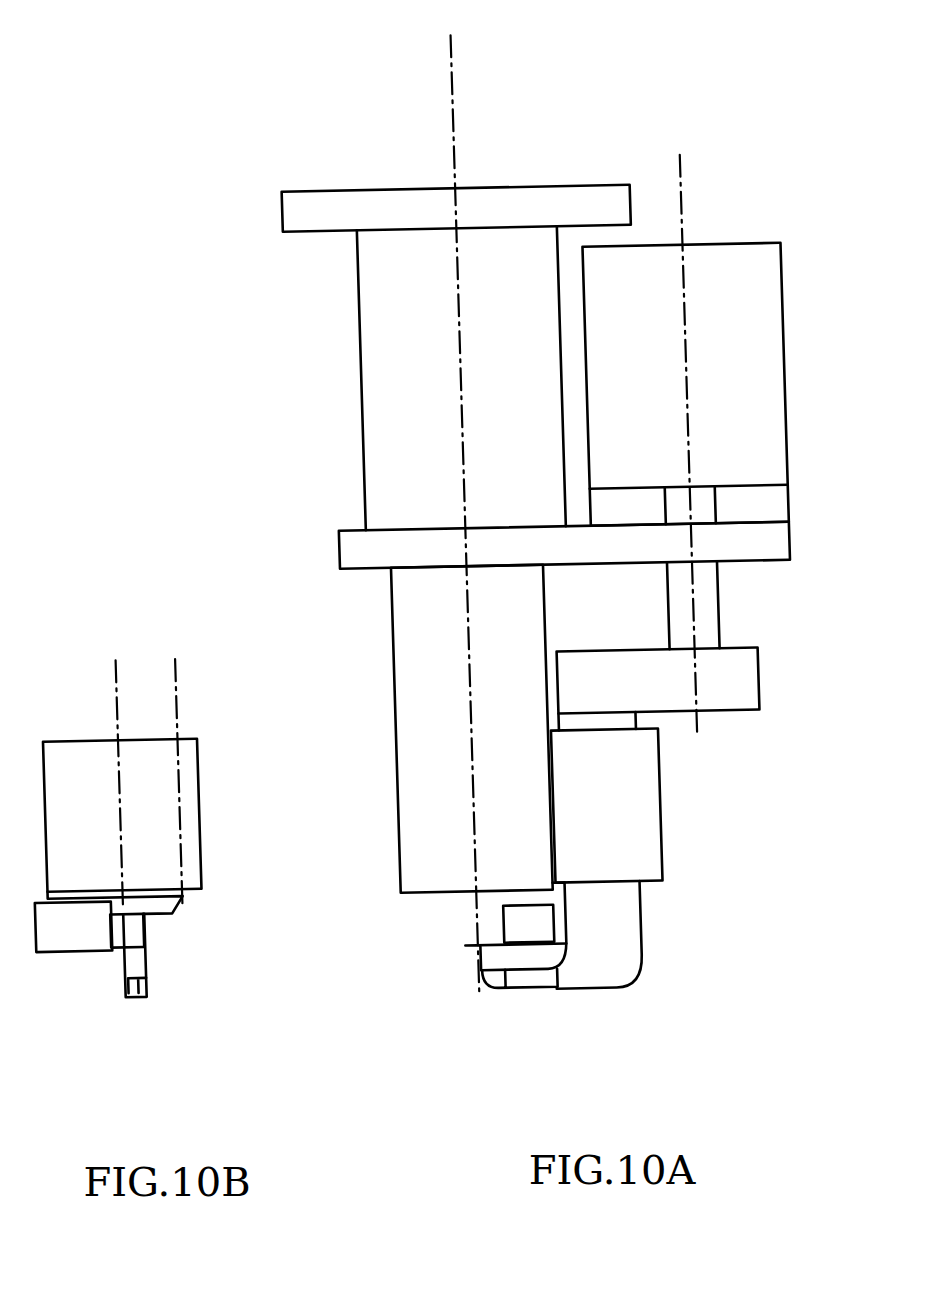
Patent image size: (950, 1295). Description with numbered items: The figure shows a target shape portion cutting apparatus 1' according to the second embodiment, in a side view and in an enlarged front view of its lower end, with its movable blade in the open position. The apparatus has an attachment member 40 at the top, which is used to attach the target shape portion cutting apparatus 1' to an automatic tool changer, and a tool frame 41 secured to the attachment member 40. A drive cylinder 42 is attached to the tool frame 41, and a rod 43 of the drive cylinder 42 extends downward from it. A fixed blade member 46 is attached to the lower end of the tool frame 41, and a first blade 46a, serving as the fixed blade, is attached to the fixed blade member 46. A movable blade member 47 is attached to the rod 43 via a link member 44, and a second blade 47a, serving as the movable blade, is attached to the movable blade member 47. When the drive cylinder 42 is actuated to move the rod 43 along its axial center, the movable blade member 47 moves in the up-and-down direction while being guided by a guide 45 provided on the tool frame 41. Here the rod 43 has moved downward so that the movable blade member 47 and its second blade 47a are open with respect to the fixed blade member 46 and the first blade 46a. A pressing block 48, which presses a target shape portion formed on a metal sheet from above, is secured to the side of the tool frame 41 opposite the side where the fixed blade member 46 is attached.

In FIG. 10A, the target shape portion cutting apparatus 1' is at (563, 507).
In FIG. 10A, the attachment member 40 is at (370, 190).
In FIG. 10A, the tool frame 41 is at (393, 641).
In FIG. 10A, the drive cylinder 42 is at (725, 247).
In FIG. 10A, the rod 43 is at (720, 597).
In FIG. 10A, the link member 44 is at (758, 684).
In FIG. 10A, the guide 45 is at (662, 797).
In FIG. 10A, the fixed blade member 46 is at (452, 945).
In FIG. 10A, the first blade 46a is at (508, 927).
In FIG. 10B, the first blade 46a is at (120, 932).
In FIG. 10A, the movable blade member 47 is at (640, 958).
In FIG. 10A, the second blade 47a is at (522, 990).
In FIG. 10B, the second blade 47a is at (143, 983).
In FIG. 10B, the pressing block 48 is at (70, 945).